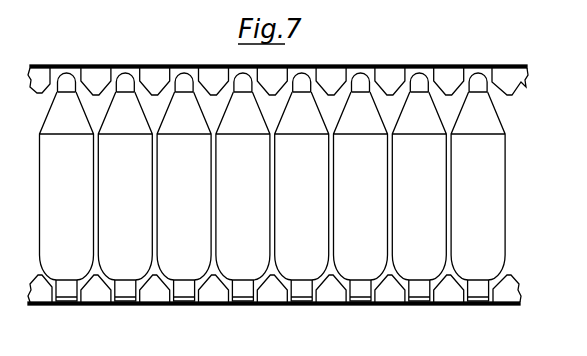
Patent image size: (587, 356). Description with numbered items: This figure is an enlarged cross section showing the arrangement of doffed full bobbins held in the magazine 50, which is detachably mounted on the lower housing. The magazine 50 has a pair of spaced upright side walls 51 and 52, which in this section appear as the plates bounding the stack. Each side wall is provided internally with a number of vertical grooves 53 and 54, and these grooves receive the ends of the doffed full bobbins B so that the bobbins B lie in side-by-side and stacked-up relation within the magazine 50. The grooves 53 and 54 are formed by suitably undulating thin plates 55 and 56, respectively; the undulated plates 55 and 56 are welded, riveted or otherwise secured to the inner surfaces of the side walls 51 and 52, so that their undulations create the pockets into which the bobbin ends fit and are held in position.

The magazine 50 is at (299, 307).
The side wall 51 is at (331, 66).
The side wall 52 is at (57, 306).
The vertical grooves 53 is at (142, 72).
The vertical grooves 54 is at (140, 304).
The undulated thin plate 55 is at (141, 78).
The undulated thin plate 56 is at (224, 284).
The full bobbins B is at (190, 272).